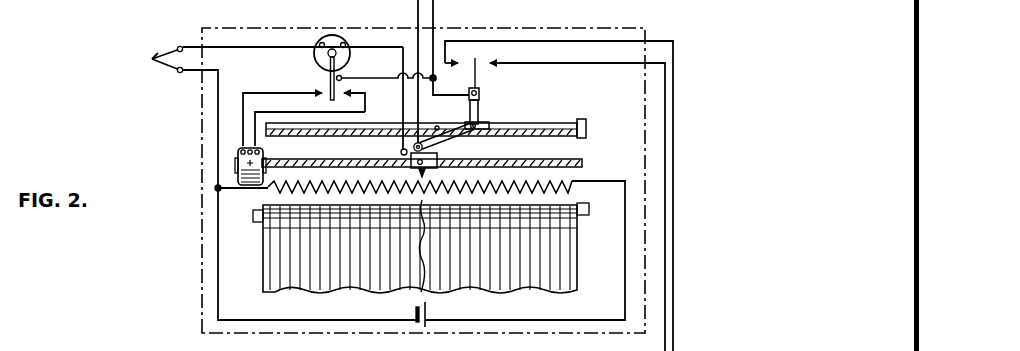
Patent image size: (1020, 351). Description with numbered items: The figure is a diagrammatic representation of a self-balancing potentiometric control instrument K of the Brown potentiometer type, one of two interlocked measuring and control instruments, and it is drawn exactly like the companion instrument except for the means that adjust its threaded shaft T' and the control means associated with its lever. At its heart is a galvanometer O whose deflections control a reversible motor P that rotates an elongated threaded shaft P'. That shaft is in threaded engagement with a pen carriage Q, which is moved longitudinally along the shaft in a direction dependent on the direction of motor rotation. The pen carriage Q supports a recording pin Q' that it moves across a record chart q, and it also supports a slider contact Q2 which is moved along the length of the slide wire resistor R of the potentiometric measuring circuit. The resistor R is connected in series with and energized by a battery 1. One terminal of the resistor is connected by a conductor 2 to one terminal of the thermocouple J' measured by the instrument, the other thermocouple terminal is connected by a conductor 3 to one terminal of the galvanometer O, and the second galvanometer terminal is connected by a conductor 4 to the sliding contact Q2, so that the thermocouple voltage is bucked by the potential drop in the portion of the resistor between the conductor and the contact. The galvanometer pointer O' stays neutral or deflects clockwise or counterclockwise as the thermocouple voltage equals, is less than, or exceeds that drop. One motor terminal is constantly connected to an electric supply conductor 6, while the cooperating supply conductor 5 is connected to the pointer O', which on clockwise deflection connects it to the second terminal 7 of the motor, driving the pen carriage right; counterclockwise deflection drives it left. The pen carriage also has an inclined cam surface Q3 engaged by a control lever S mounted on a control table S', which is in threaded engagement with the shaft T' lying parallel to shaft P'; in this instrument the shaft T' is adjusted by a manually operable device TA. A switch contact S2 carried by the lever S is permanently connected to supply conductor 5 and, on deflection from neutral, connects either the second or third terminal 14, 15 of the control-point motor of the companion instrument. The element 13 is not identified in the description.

The thermocouple J' is at (160, 51).
The conductor 3 is at (238, 49).
The conductor 2 is at (218, 92).
The second terminal of the motor P 7 is at (246, 107).
The galvanometer O is at (318, 53).
The galvanometer pointer O' is at (367, 78).
The conductor 4 is at (403, 101).
The electric supply conductor 6 is at (417, 19).
The electric supply conductor 5 is at (434, 19).
The switch contact S2 is at (480, 90).
The control table S' is at (485, 93).
The control lever S is at (444, 140).
The pen carriage Q is at (405, 154).
The cam surface Q3 is at (437, 126).
The slider contact Q2 is at (426, 172).
The threaded shaft T' is at (421, 115).
The manually operable device TA is at (587, 124).
The threaded shaft P' is at (422, 154).
The reversible motor P is at (257, 163).
The slide wire resistor R is at (556, 179).
The battery 1 is at (415, 308).
The record chart q is at (578, 246).
The recording pin Q' is at (403, 240).
The control instrument K is at (200, 280).
The second terminal of the motor T 14 is at (674, 88).
The third terminal of the motor T 15 is at (621, 64).
The conductor 13 is at (145, 348).